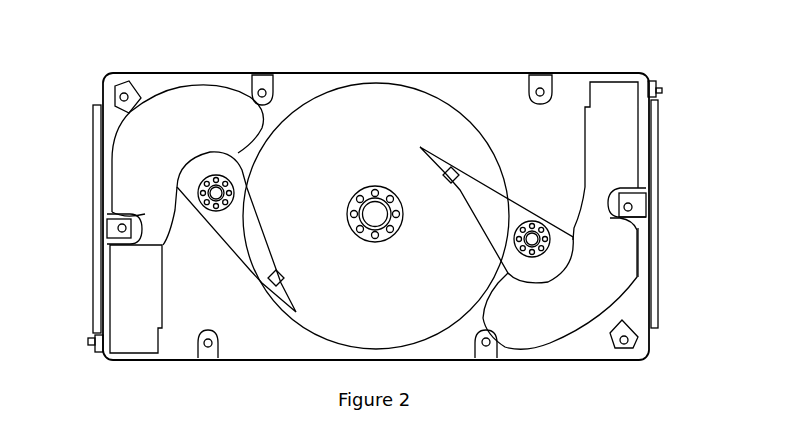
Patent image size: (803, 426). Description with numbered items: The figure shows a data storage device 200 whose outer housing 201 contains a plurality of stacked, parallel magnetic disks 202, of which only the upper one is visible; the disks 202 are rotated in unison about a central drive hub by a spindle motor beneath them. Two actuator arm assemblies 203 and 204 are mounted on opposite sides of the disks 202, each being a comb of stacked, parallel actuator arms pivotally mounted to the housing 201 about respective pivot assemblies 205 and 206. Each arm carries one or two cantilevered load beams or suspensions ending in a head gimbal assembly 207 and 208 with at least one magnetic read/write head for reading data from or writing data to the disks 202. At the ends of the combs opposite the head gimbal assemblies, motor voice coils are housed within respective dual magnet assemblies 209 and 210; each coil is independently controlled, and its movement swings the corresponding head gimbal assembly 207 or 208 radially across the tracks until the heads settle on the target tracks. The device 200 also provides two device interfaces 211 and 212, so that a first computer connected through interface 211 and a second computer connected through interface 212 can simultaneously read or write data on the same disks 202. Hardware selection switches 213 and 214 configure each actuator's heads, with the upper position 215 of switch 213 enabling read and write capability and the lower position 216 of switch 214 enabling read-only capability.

The data storage device 200 is at (378, 199).
The outer housing 201 is at (479, 72).
The magnetic disks 202 is at (372, 100).
The actuator arm assembly 203 is at (233, 250).
The actuator arm assembly 204 is at (477, 220).
The pivot assembly 205 is at (233, 188).
The pivot assembly 206 is at (521, 222).
The head gimbal assembly 207 is at (296, 293).
The head gimbal assembly 208 is at (420, 148).
The dual magnet assembly 209 is at (205, 102).
The dual magnet assembly 210 is at (528, 322).
The device interface 211 is at (92, 172).
The device interface 212 is at (655, 272).
The hardware selection switch 213 is at (92, 347).
The hardware selection switch 214 is at (658, 85).
The upper position 215 is at (89, 339).
The lower position 216 is at (661, 92).